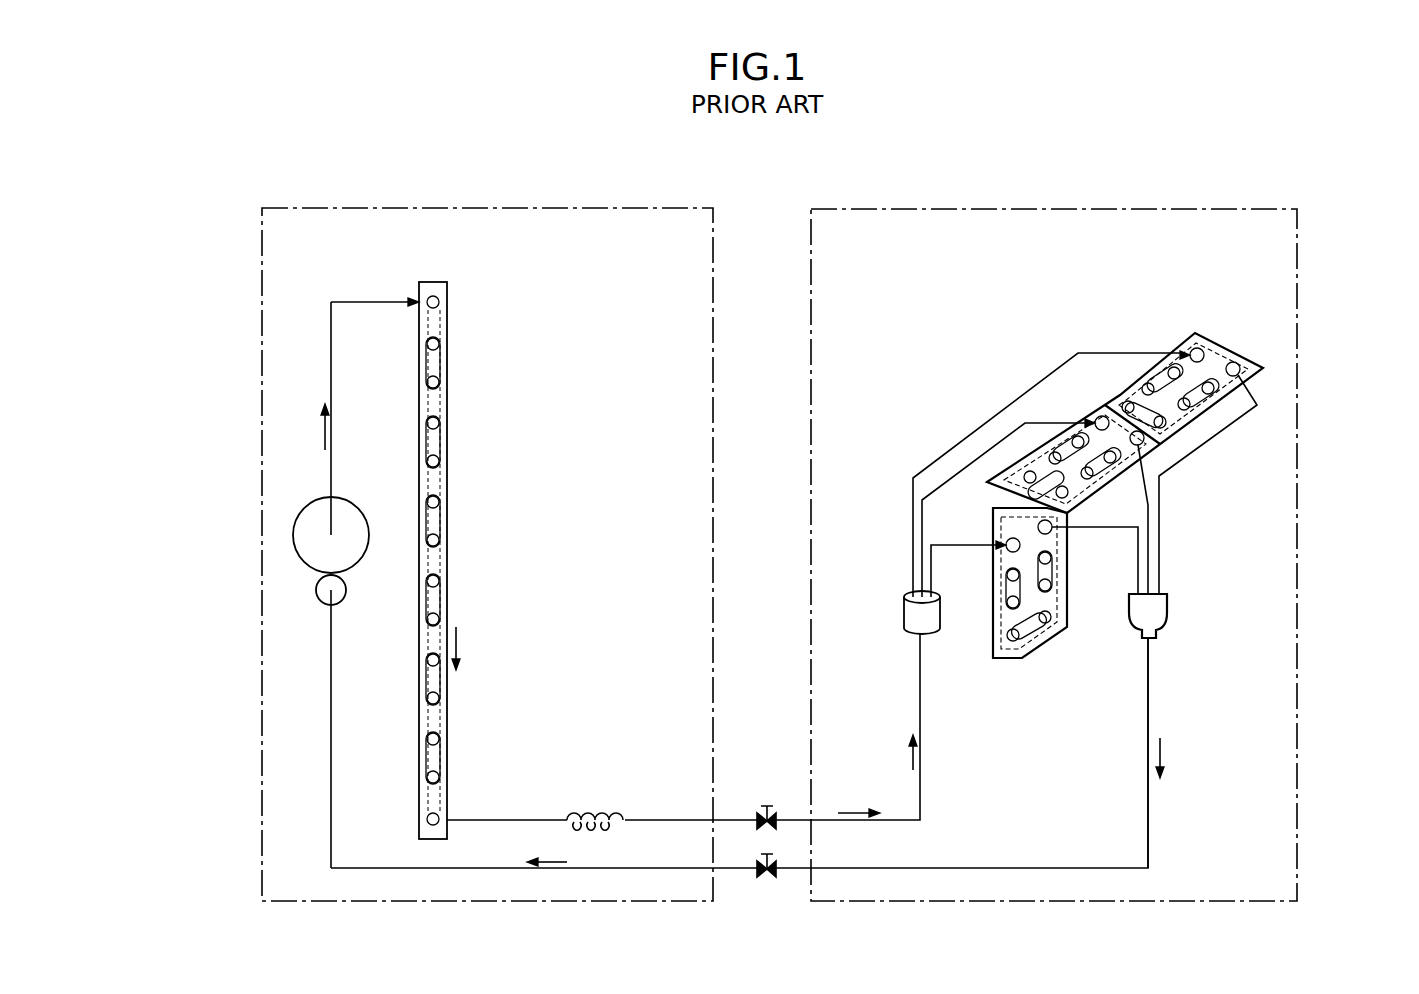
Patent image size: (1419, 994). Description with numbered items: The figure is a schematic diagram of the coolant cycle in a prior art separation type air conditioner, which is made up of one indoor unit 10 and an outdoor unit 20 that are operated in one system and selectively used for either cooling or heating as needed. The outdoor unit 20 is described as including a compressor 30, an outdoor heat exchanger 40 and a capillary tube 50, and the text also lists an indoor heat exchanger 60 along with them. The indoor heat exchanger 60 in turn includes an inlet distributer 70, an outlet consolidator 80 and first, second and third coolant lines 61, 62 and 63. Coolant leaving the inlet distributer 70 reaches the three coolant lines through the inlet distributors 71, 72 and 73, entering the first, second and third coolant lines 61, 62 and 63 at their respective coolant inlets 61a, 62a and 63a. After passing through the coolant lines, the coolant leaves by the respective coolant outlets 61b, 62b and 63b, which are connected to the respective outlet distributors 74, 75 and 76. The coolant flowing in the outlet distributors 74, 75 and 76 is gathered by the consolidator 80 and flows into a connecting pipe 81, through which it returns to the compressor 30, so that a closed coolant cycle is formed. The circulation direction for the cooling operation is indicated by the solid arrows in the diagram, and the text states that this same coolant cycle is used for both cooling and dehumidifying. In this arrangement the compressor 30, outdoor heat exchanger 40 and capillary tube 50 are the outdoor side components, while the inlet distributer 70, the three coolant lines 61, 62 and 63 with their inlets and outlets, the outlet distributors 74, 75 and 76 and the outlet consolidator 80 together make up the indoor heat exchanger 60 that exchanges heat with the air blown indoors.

The indoor unit 10 is at (1188, 209).
The outdoor unit 20 is at (542, 208).
The compressor 30 is at (313, 555).
The outdoor heat exchanger 40 is at (449, 359).
The capillary tube 50 is at (597, 811).
The indoor heat exchanger 60 is at (1172, 395).
The first coolant line 61 is at (1238, 356).
The coolant inlet of first coolant line 61a is at (1203, 349).
The coolant outlet of first coolant line 61b is at (1243, 369).
The second coolant line 62 is at (1180, 407).
The coolant inlet of second coolant line 62a is at (1096, 416).
The coolant outlet of second coolant line 62b is at (1146, 441).
The third coolant line 63 is at (1044, 589).
The coolant inlet of third coolant line 63a is at (1006, 541).
The coolant outlet of third coolant line 63b is at (1052, 531).
The inlet distributer 70 is at (905, 623).
The inlet distributor 71 is at (1040, 384).
The inlet distributor 72 is at (962, 468).
The inlet distributor 73 is at (930, 570).
The outlet distributor 74 is at (1185, 466).
The outlet distributor 75 is at (1141, 530).
The outlet distributor 76 is at (1150, 587).
The outlet consolidator 80 is at (1164, 618).
The connecting pipe 81 is at (1150, 697).